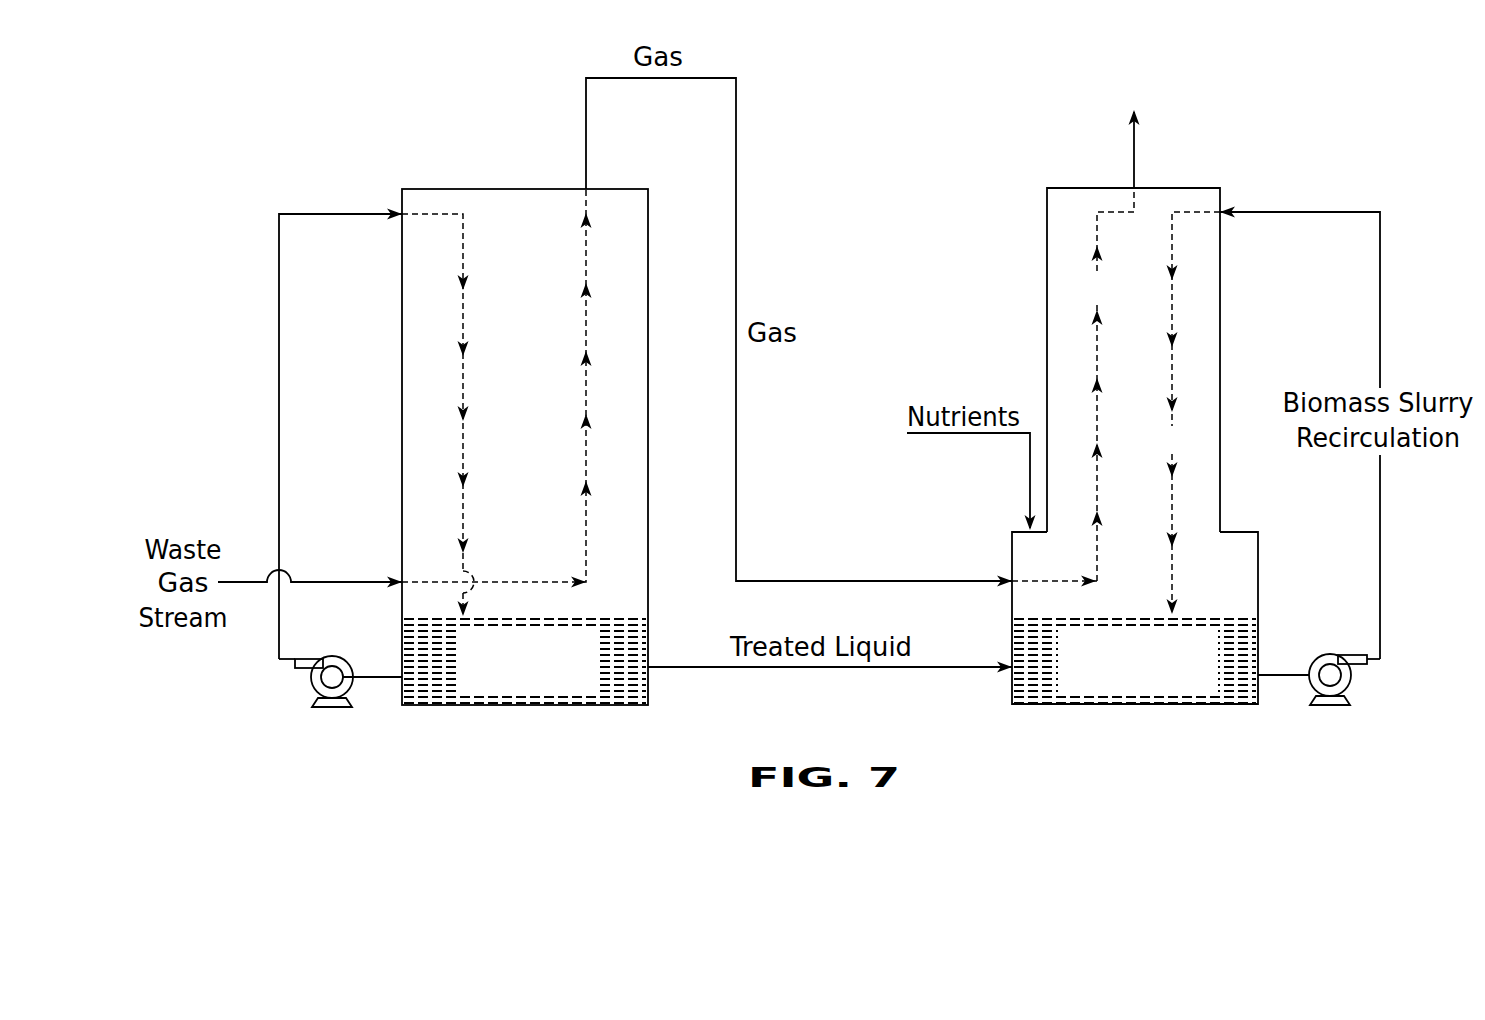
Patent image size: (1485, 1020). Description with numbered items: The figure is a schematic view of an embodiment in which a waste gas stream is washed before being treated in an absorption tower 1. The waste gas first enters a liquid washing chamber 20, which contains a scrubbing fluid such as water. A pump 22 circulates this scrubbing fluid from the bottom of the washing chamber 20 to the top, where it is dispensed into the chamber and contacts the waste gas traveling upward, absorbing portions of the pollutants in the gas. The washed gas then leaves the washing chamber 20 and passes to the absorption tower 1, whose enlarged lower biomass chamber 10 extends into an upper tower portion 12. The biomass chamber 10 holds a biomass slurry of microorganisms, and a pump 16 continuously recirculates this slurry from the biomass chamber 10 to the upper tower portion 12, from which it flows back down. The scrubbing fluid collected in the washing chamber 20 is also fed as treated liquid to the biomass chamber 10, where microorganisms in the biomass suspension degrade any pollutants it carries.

The absorption tower 1 is at (1104, 390).
The biomass chamber 10 is at (1258, 575).
The upper tower portion 12 is at (1219, 288).
The pump 16 is at (1350, 677).
The liquid washing chamber 20 is at (452, 166).
The pump 22 is at (313, 675).